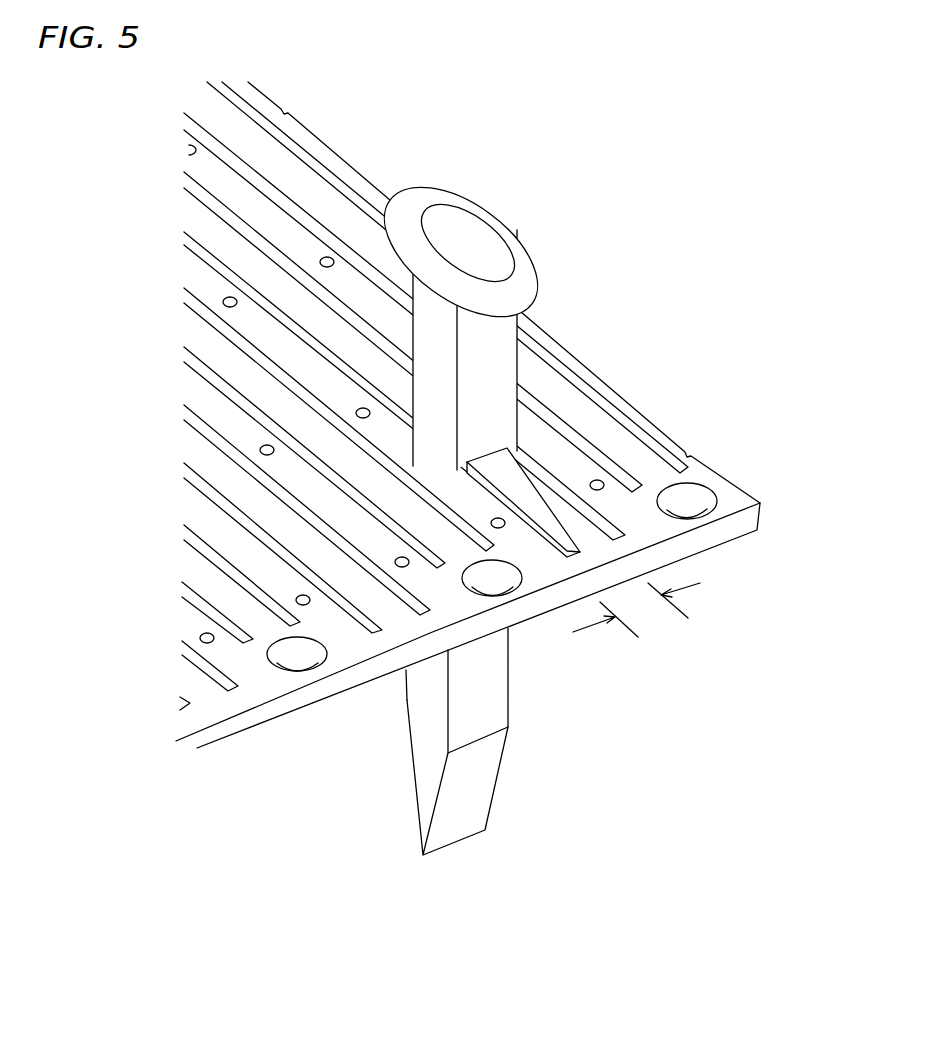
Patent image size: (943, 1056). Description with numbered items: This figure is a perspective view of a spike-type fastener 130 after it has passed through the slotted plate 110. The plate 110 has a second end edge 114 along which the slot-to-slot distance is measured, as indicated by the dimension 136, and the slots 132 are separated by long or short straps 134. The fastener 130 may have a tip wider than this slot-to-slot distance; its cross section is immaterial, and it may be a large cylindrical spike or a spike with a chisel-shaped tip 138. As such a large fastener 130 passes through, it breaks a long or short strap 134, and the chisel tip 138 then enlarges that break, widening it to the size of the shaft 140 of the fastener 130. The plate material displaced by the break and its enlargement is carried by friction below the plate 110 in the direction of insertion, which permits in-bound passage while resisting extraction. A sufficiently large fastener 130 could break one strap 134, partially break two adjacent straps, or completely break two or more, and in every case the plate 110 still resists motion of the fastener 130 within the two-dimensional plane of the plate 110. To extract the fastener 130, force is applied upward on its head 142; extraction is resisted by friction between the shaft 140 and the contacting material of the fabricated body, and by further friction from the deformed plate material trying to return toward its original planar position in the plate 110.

The plate 110 is at (495, 443).
The second end edge 114 is at (250, 717).
The spike-type fastener 130 is at (488, 522).
The slot 132 is at (368, 632).
The strap 134 is at (538, 498).
The dimension 136 is at (636, 610).
The chisel tip 138 is at (467, 842).
The shaft 140 is at (495, 663).
The head 142 is at (517, 222).